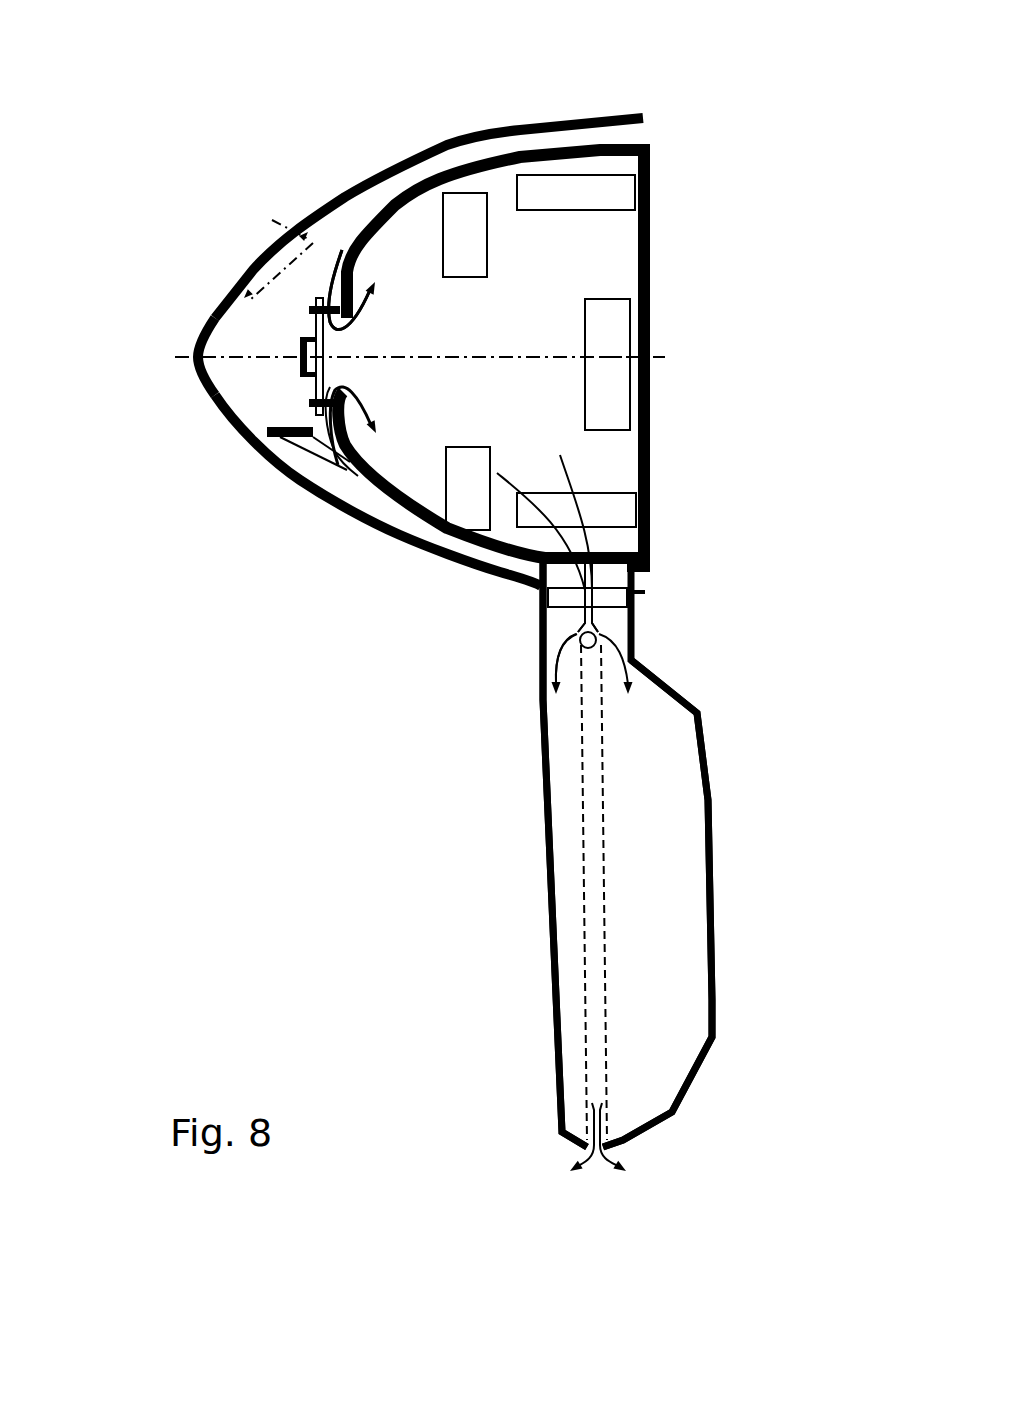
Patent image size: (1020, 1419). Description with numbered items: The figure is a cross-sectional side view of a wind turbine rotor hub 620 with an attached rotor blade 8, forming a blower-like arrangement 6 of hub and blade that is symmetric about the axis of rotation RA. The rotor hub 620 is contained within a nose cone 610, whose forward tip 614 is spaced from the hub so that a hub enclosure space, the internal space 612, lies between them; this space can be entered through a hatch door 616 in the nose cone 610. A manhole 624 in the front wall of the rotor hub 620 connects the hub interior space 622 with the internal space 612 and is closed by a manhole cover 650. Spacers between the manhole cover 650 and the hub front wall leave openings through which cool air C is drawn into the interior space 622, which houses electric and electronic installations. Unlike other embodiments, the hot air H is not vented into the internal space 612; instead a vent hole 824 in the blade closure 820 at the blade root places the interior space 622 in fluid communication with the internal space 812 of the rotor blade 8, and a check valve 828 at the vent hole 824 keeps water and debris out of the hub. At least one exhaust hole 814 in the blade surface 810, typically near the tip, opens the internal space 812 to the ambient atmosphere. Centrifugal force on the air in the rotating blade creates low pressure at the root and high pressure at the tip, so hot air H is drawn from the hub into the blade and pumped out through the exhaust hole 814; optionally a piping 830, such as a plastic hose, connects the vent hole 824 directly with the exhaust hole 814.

The blower unit 6 is at (360, 130).
The nose cone 610 is at (580, 120).
The internal space 612 is at (285, 348).
The nose tip of housing 614 is at (180, 341).
The hatch door 616 is at (272, 262).
The rotor hub 620 is at (652, 250).
The interior space 622 is at (575, 283).
The manhole 624 is at (356, 347).
The manhole cover 650 is at (276, 390).
The cool air C is at (240, 278).
The axis of rotation RA is at (662, 356).
The rotor blade 8 is at (526, 902).
The surface 810 is at (548, 963).
The internal space 812 is at (680, 894).
The exhaust hole 814 is at (595, 1196).
The blade closure 820 is at (546, 600).
The vent hole 824 is at (606, 597).
The check valve 828 is at (577, 633).
The piping 830 is at (605, 997).
The hot air H is at (578, 660).